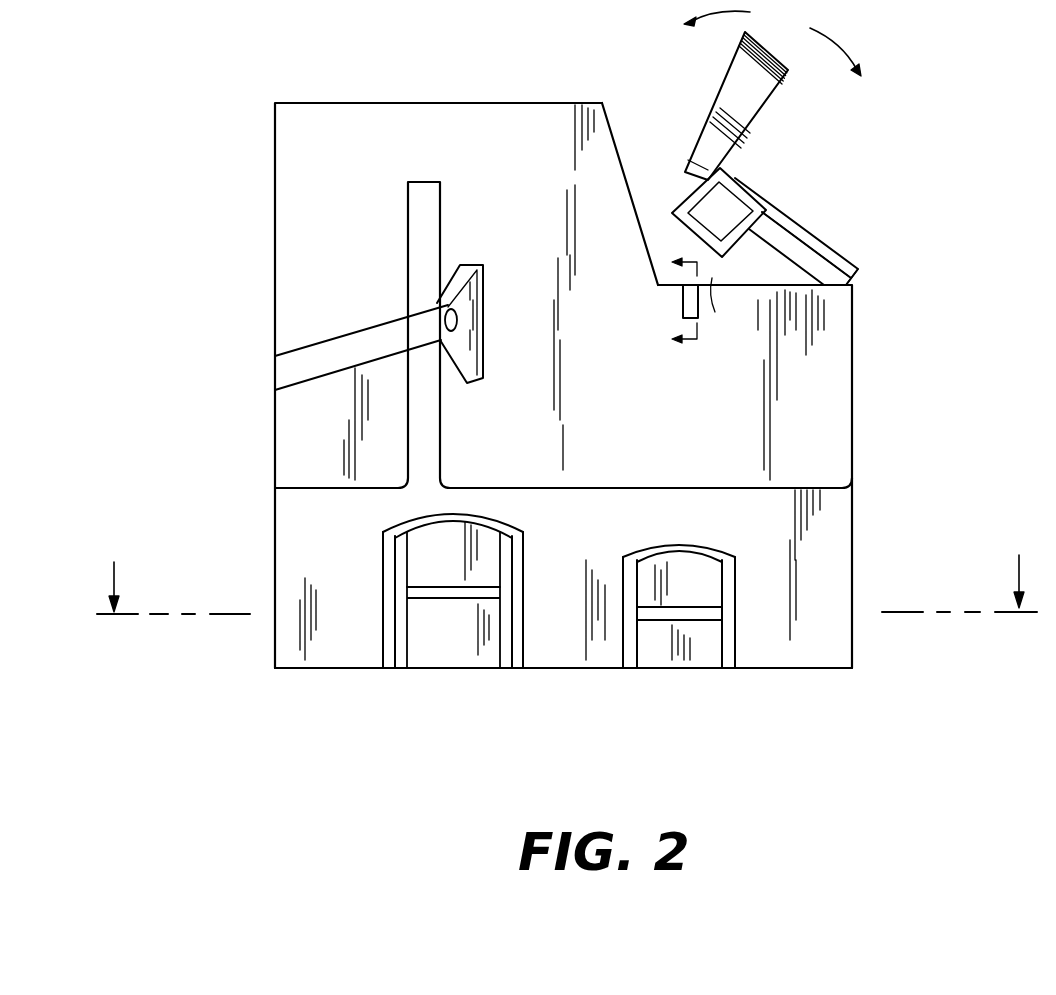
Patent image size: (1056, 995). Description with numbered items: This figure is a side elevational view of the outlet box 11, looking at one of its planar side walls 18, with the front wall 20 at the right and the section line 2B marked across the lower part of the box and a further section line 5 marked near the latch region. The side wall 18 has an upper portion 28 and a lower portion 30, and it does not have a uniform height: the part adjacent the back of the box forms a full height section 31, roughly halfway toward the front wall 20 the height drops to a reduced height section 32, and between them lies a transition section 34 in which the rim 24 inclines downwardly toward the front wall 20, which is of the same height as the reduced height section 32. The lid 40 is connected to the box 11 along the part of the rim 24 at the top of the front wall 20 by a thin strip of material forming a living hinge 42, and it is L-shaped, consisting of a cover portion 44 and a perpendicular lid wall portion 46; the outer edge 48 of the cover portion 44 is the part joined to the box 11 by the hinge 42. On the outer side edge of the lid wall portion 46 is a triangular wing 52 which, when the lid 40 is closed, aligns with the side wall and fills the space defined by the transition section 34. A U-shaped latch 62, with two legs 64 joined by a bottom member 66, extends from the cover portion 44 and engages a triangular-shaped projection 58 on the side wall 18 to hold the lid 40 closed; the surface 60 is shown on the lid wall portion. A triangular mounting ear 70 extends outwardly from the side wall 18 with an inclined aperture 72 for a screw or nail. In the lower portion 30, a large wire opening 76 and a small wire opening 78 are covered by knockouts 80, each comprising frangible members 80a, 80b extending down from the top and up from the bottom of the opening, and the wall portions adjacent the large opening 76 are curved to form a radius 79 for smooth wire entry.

The outlet box 11 is at (265, 531).
The side wall 18 is at (307, 223).
The front wall 20 is at (853, 457).
The rim 24 is at (734, 303).
The upper portion 28 is at (350, 158).
The lower portion 30 is at (830, 598).
The full height section 31 is at (437, 120).
The reduced height section 32 is at (807, 368).
The transition section 34 is at (637, 187).
The lid 40 is at (772, 52).
The living hinge 42 is at (852, 287).
The cover portion 44 is at (780, 213).
The lid wall portion 46 is at (748, 120).
The outer edge 48 is at (837, 260).
The wing 52 is at (732, 78).
The triangular-shaped projection 58 is at (680, 297).
The arm side face 60 is at (800, 258).
The latch 62 is at (712, 167).
The leg 64 is at (683, 185).
The bottom member 66 is at (697, 227).
The mounting ear 70 is at (362, 330).
The aperture 72 is at (457, 325).
The large wire opening 76 is at (505, 668).
The small wire opening 78 is at (725, 655).
The radius 79 is at (382, 643).
The knockout 80 is at (643, 652).
The frangible member 80a is at (442, 565).
The frangible member 80b is at (435, 643).
The section line 5 is at (671, 301).
The section line 2B is at (567, 572).